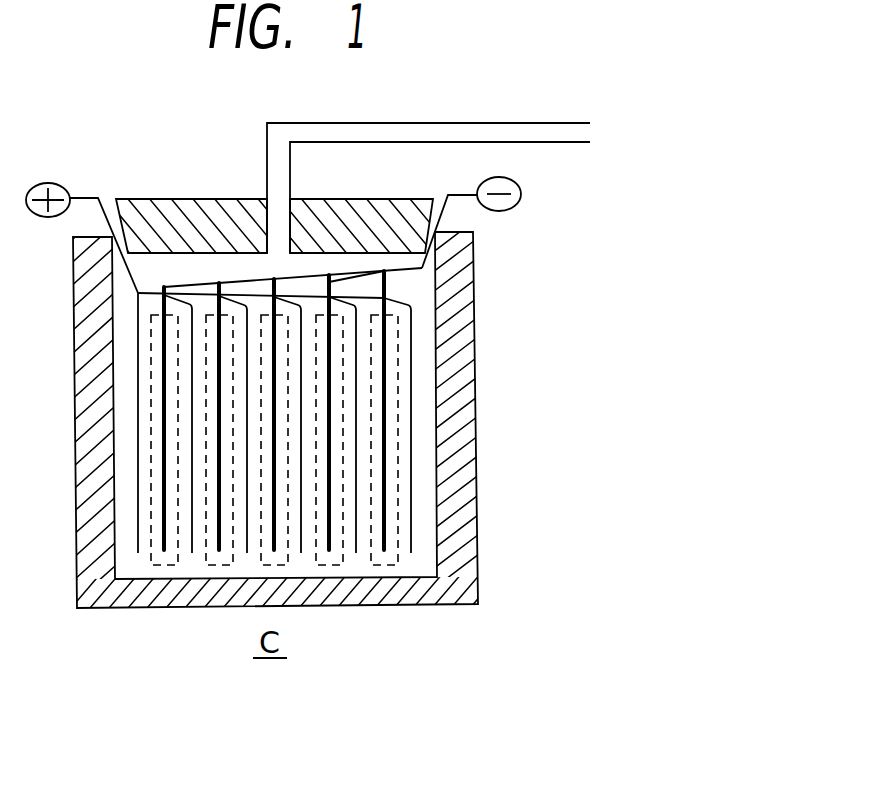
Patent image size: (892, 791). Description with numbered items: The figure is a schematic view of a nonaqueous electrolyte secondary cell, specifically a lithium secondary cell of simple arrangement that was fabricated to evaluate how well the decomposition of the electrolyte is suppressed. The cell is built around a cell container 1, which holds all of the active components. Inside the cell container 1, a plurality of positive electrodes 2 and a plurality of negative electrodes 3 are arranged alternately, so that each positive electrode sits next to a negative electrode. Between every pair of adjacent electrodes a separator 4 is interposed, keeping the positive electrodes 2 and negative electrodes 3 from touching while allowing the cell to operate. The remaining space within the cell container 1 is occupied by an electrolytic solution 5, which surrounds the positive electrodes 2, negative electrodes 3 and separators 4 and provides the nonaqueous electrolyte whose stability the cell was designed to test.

The cell container 1 is at (473, 276).
The positive electrodes 2 is at (386, 352).
The negative electrodes 3 is at (413, 408).
The separator 4 is at (400, 470).
The electrolytic solution 5 is at (427, 538).